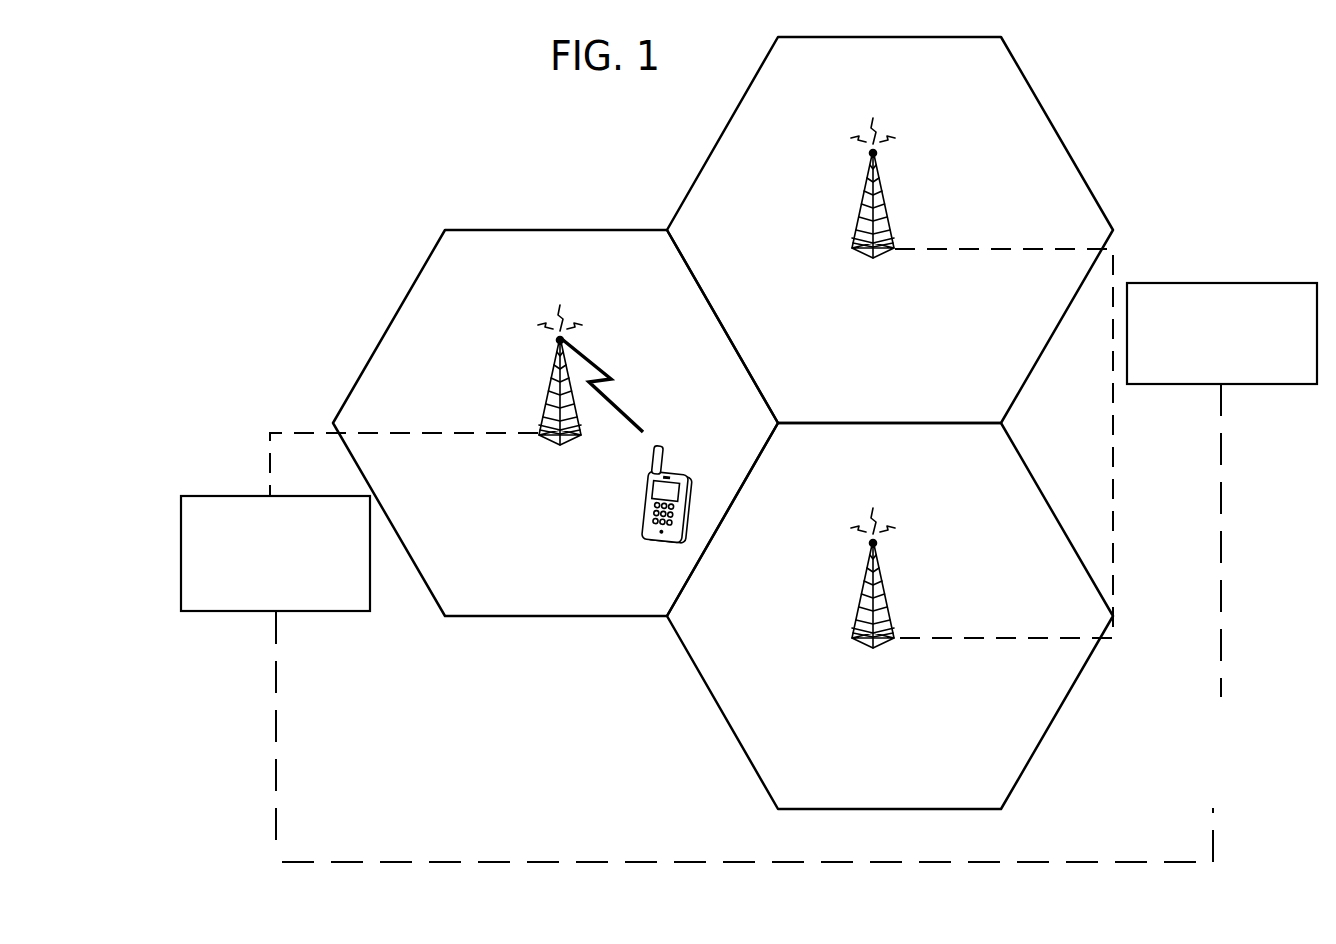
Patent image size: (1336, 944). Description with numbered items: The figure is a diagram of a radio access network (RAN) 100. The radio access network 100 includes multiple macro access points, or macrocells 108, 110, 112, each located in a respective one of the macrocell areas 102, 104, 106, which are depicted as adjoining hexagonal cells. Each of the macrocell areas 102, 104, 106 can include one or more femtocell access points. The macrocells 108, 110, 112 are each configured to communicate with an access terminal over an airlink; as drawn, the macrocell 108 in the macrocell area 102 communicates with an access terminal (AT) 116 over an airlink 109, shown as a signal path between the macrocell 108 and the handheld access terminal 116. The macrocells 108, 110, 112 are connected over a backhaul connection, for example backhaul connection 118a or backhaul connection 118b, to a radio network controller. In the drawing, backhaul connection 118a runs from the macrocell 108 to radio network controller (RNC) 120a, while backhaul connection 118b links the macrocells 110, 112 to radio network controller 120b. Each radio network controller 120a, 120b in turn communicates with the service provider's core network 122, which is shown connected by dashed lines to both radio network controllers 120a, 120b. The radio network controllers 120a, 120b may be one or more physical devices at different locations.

The radio access network 100 is at (486, 112).
The macrocell area 102 is at (385, 300).
The macrocell area 104 is at (1047, 88).
The macrocell area 106 is at (694, 716).
The macrocell 108 is at (546, 441).
The airlink 109 is at (612, 379).
The macrocell 110 is at (872, 259).
The macrocell 112 is at (872, 649).
The access terminal 116 is at (641, 540).
The backhaul connection 118a is at (267, 452).
The backhaul connection 118b is at (1163, 534).
The radio network controller 120a is at (275, 553).
The radio network controller 120b is at (1222, 333).
The service provider's core network 122 is at (1208, 682).